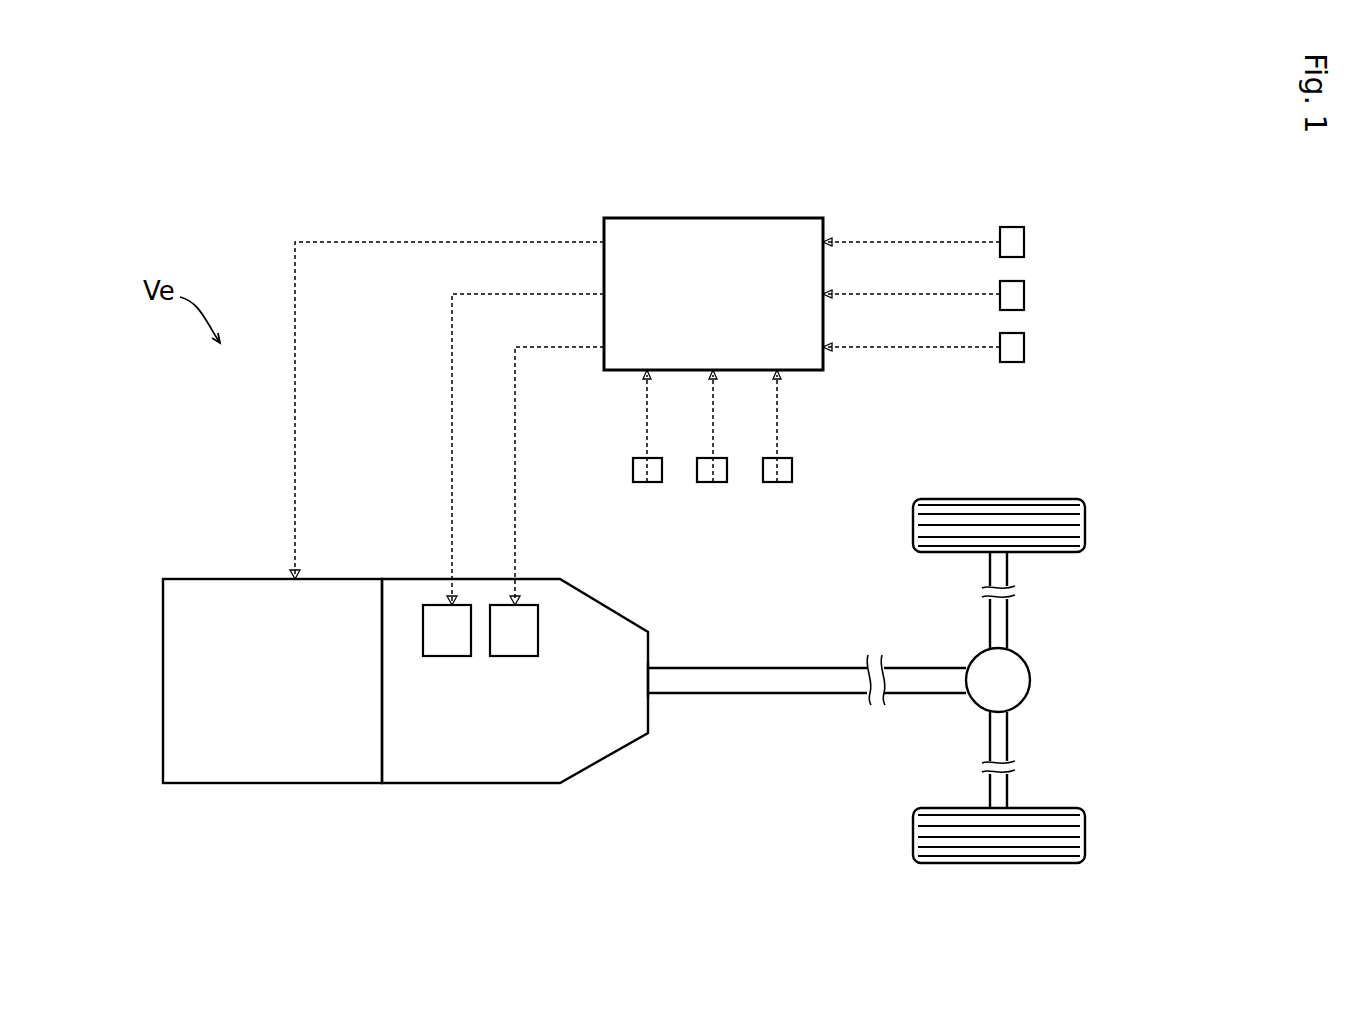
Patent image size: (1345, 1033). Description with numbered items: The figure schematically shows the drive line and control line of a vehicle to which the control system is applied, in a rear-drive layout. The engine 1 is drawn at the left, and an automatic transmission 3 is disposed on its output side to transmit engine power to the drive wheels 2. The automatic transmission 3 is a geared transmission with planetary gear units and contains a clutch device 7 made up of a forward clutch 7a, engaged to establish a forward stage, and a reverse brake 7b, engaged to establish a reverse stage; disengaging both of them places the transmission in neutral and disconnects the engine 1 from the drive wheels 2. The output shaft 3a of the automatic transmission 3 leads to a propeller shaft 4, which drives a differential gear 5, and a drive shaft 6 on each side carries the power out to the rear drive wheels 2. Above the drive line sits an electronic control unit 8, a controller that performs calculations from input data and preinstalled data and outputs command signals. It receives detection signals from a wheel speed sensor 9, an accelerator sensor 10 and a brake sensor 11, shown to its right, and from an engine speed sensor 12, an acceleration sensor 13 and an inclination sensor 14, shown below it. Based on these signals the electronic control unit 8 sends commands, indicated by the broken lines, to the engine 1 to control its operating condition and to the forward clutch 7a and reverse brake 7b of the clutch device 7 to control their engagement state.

The engine 1 is at (253, 770).
The drive wheels 2 is at (1082, 518).
The automatic transmission 3 is at (444, 770).
The output shaft 3a is at (655, 680).
The propeller shaft 4 is at (793, 685).
The differential gear 5 is at (1030, 684).
The drive shaft 6 is at (1008, 619).
The clutch device 7 is at (486, 679).
The forward clutch 7a is at (448, 647).
The reverse brake 7b is at (514, 659).
The electronic control unit 8 is at (718, 218).
The wheel speed sensor 9 is at (1024, 240).
The accelerator sensor 10 is at (1024, 296).
The brake sensor 11 is at (1024, 348).
The engine speed sensor 12 is at (650, 477).
The acceleration sensor 13 is at (716, 477).
The inclination sensor 14 is at (781, 477).